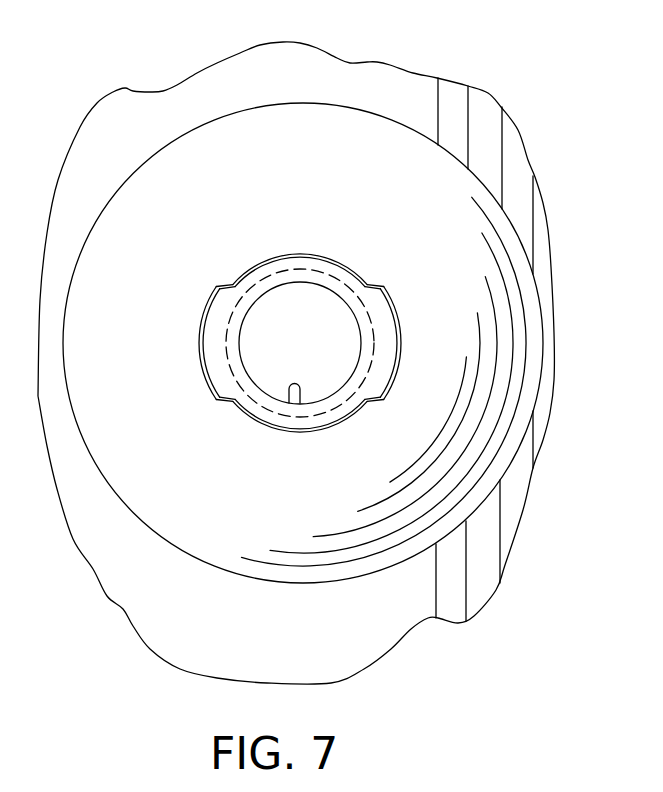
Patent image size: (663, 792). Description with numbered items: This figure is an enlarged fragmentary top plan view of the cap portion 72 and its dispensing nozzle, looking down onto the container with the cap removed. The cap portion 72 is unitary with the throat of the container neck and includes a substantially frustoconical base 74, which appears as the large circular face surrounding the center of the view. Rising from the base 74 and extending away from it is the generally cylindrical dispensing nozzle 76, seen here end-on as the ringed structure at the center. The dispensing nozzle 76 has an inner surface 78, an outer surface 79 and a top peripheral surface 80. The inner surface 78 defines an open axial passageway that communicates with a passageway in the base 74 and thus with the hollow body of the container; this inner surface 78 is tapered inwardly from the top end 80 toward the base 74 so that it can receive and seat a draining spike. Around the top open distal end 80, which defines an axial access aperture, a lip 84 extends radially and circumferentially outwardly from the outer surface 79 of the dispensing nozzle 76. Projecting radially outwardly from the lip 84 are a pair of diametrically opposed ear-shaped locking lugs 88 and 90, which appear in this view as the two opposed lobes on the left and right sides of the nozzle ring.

The cap portion 72 is at (163, 132).
The frustoconical base 74 is at (232, 228).
The dispensing nozzle 76 is at (216, 381).
The inner surface 78 is at (289, 400).
The outer surface 79 is at (246, 405).
The top peripheral surface 80 is at (340, 288).
The lip 84 is at (318, 267).
The locking lug 88 is at (388, 323).
The locking lug 90 is at (213, 330).